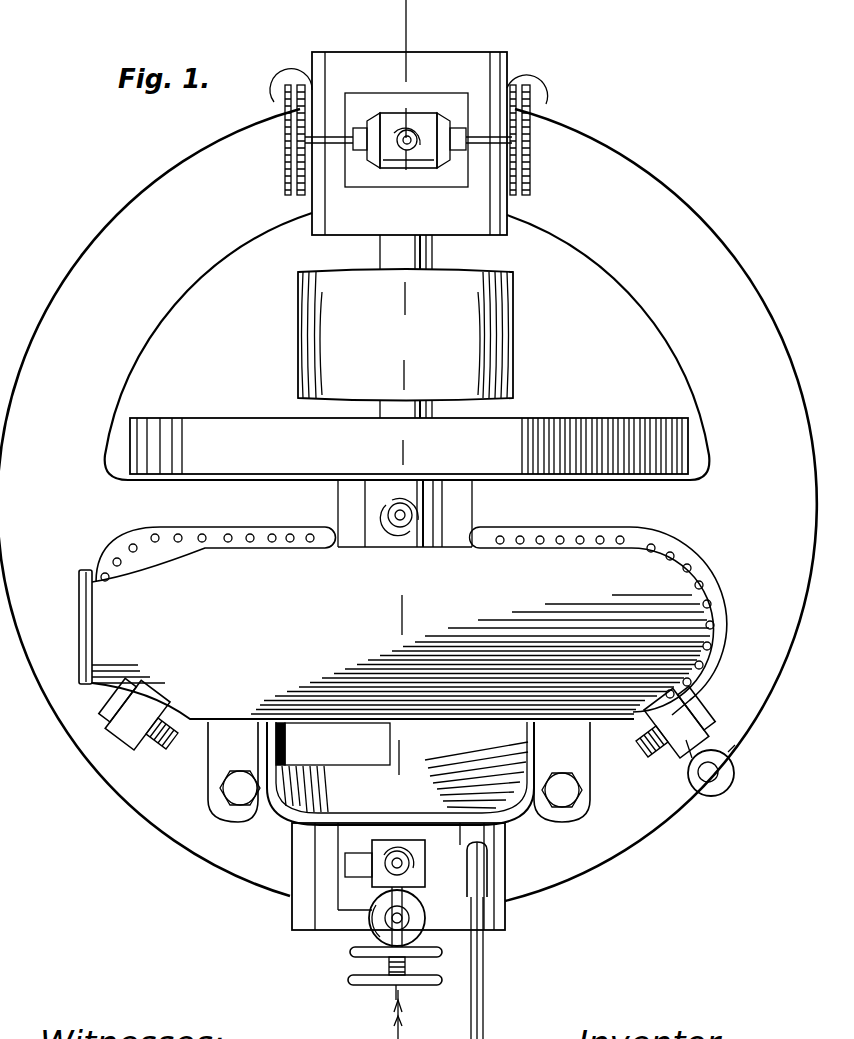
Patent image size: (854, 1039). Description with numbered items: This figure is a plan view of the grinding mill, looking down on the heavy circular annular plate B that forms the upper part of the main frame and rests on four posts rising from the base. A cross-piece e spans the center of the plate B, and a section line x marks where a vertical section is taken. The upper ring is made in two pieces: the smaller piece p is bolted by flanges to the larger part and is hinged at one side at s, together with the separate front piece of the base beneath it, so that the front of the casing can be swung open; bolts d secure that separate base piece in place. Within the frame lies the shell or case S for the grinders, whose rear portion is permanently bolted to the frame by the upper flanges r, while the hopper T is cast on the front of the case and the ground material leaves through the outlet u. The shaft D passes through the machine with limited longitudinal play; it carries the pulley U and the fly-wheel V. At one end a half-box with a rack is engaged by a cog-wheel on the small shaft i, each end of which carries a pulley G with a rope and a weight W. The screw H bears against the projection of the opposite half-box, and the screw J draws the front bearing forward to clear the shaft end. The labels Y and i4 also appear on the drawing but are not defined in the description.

The circular annular plate B is at (408, 505).
The section line x is at (398, 519).
The weight W is at (415, 80).
The pulley G is at (407, 140).
The small shaft i is at (408, 140).
The shaft D is at (434, 326).
The pulley U is at (405, 335).
The cross beam Y is at (409, 446).
The upper flanges r is at (405, 552).
The cross-piece e is at (598, 608).
The shell or case for the grinders S is at (401, 645).
The outlet u is at (70, 627).
The bolts d is at (672, 726).
The hinge s is at (710, 768).
The smaller piece of plate B p is at (234, 783).
The hopper T is at (400, 773).
The screw J is at (383, 966).
The screw H is at (424, 943).
The lower bearing housing and roller i4 is at (399, 893).
The fly-wheel V is at (485, 940).